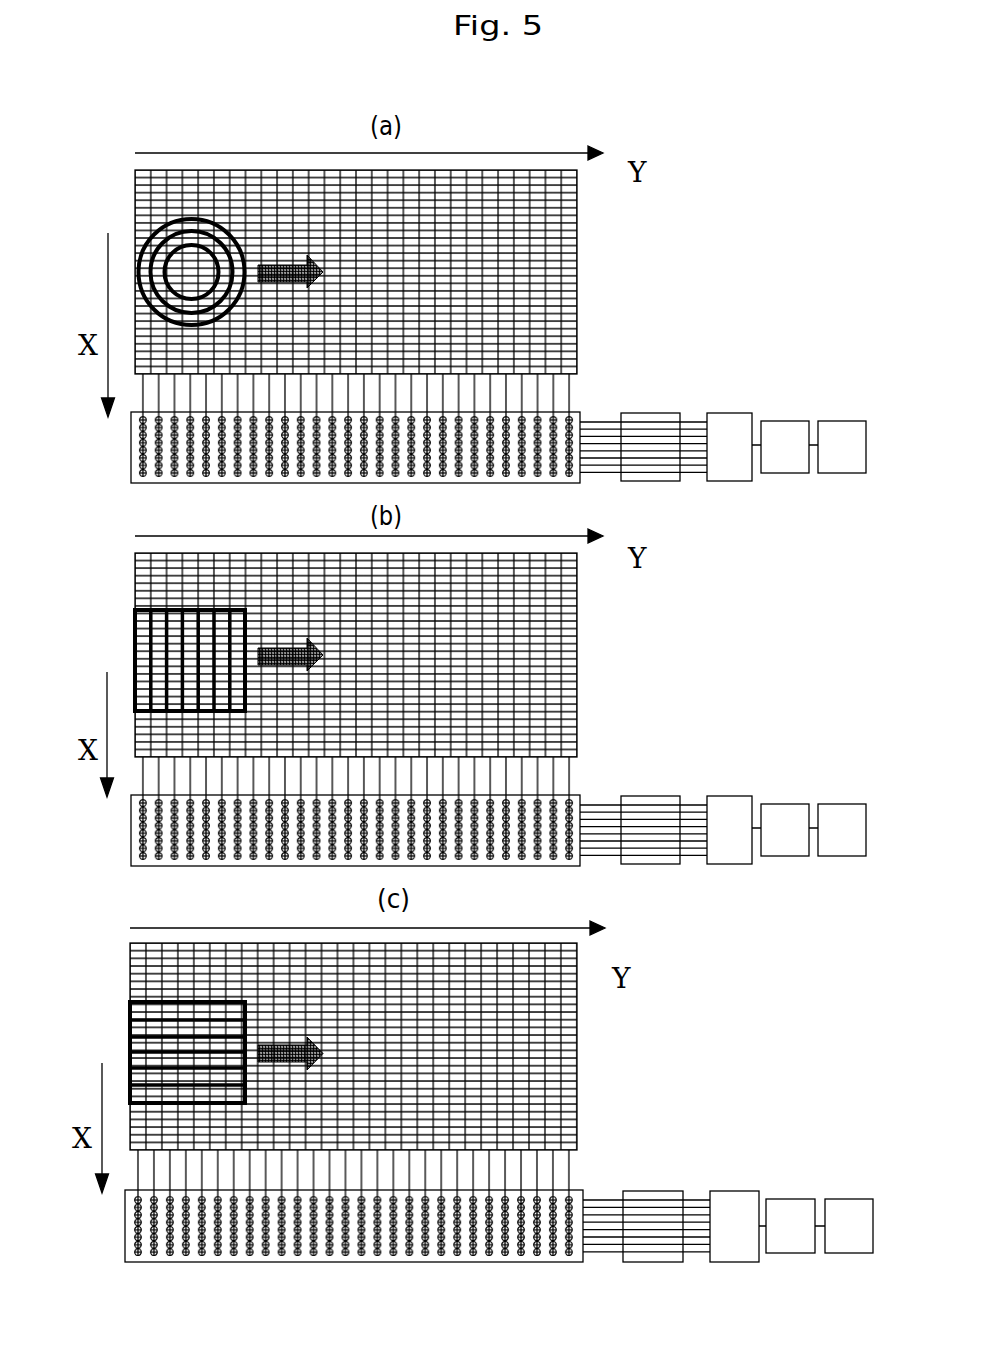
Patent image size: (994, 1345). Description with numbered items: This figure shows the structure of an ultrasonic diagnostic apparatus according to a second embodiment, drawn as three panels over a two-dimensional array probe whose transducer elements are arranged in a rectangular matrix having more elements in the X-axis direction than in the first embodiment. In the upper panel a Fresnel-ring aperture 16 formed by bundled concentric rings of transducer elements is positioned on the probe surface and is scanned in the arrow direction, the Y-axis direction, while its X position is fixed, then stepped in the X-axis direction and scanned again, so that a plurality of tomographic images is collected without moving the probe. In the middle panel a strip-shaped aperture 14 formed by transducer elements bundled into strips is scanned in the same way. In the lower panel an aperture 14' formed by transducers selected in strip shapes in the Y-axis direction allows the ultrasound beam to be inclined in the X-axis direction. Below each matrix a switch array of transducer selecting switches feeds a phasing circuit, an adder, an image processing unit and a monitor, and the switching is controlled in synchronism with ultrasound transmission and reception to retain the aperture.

The aperture formed by bundled strip-shaped pieces 14 is at (150, 655).
The aperture formed by transducers selected in strip shapes in the Y-axis direction 14' is at (142, 1046).
The aperture formed by bundled rings 16 is at (162, 230).